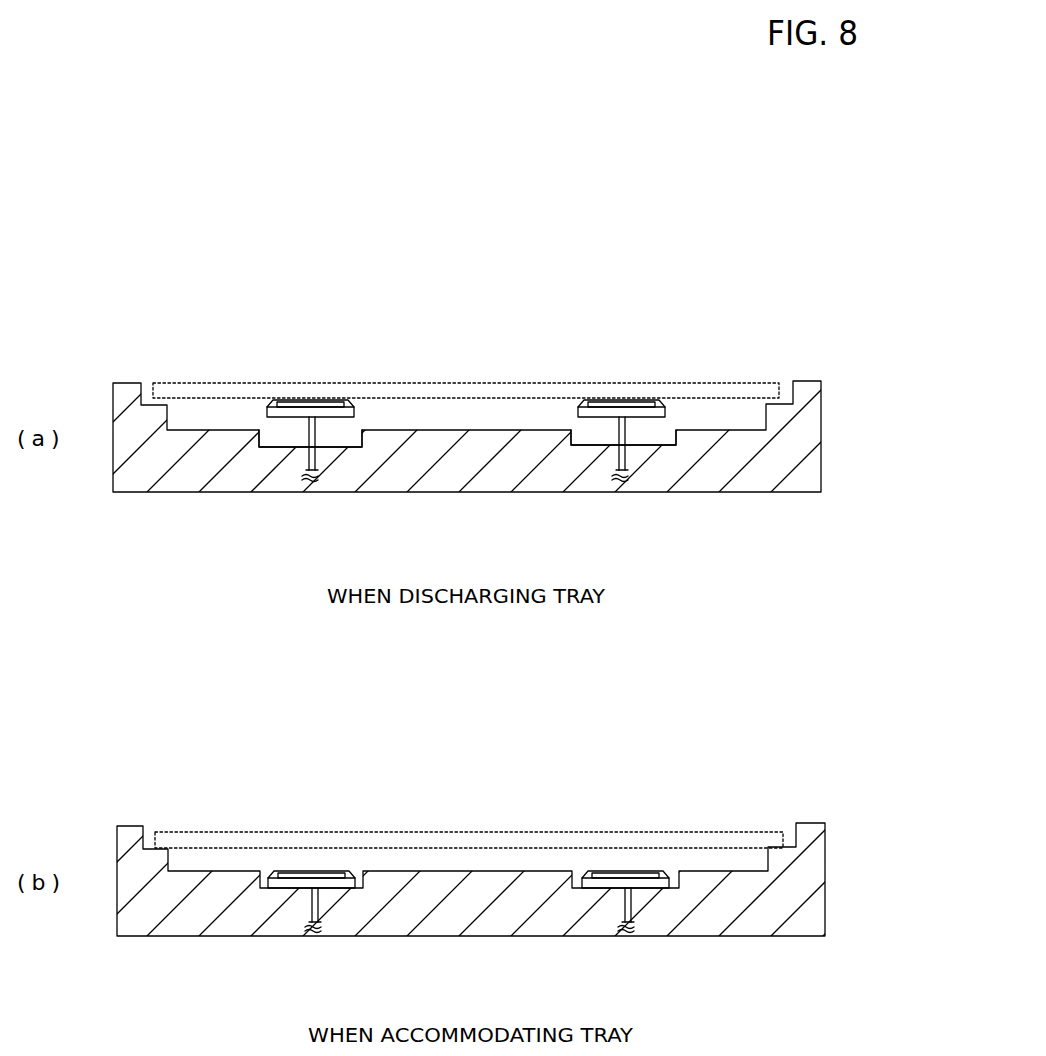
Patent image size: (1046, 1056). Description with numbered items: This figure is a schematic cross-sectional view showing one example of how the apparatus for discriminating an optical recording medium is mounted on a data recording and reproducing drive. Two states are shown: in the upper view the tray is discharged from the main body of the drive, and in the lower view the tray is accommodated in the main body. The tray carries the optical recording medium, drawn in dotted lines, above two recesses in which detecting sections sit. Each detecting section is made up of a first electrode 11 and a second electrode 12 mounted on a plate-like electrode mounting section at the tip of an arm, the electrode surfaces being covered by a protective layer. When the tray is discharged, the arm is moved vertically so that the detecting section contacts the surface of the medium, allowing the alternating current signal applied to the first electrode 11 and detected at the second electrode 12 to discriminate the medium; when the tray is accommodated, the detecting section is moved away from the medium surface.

The first electrode 11 is at (290, 447).
The second electrode 12 is at (602, 447).